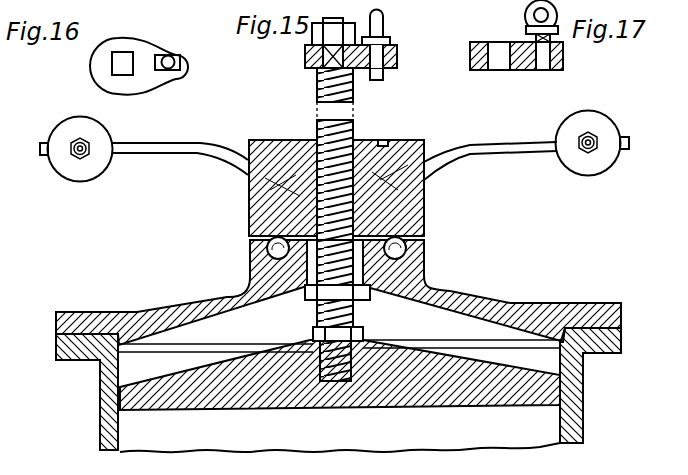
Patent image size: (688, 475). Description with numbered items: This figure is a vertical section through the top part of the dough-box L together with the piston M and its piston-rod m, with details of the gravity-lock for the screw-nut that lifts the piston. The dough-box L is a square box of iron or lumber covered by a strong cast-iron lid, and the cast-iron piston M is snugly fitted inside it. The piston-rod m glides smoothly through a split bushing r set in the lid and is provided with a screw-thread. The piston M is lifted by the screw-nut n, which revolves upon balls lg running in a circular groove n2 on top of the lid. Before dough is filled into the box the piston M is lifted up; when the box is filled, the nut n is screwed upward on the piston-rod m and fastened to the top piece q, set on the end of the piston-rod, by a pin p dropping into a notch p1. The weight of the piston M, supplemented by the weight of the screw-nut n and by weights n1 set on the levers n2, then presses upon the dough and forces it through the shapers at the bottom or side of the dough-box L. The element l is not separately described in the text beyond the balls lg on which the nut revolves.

In FIG. 15, the dough-box L is at (338, 341).
In FIG. 15, the clamping ring l is at (121, 312).
In FIG. 15, the piston M is at (289, 395).
In FIG. 15, the piston-rod m is at (362, 306).
In FIG. 15, the screw-nut n is at (249, 206).
In FIG. 15, the weights n1 is at (607, 123).
In FIG. 15, the levers n2 is at (427, 255).
In FIG. 17, the pin p is at (525, 15).
In FIG. 15, the notch p1 is at (384, 140).
In FIG. 15, the top piece q is at (392, 62).
In FIG. 16, the top piece q is at (154, 64).
In FIG. 17, the top piece q is at (523, 64).
In FIG. 15, the split bushing r is at (383, 31).
In FIG. 15, the balls lg is at (265, 246).